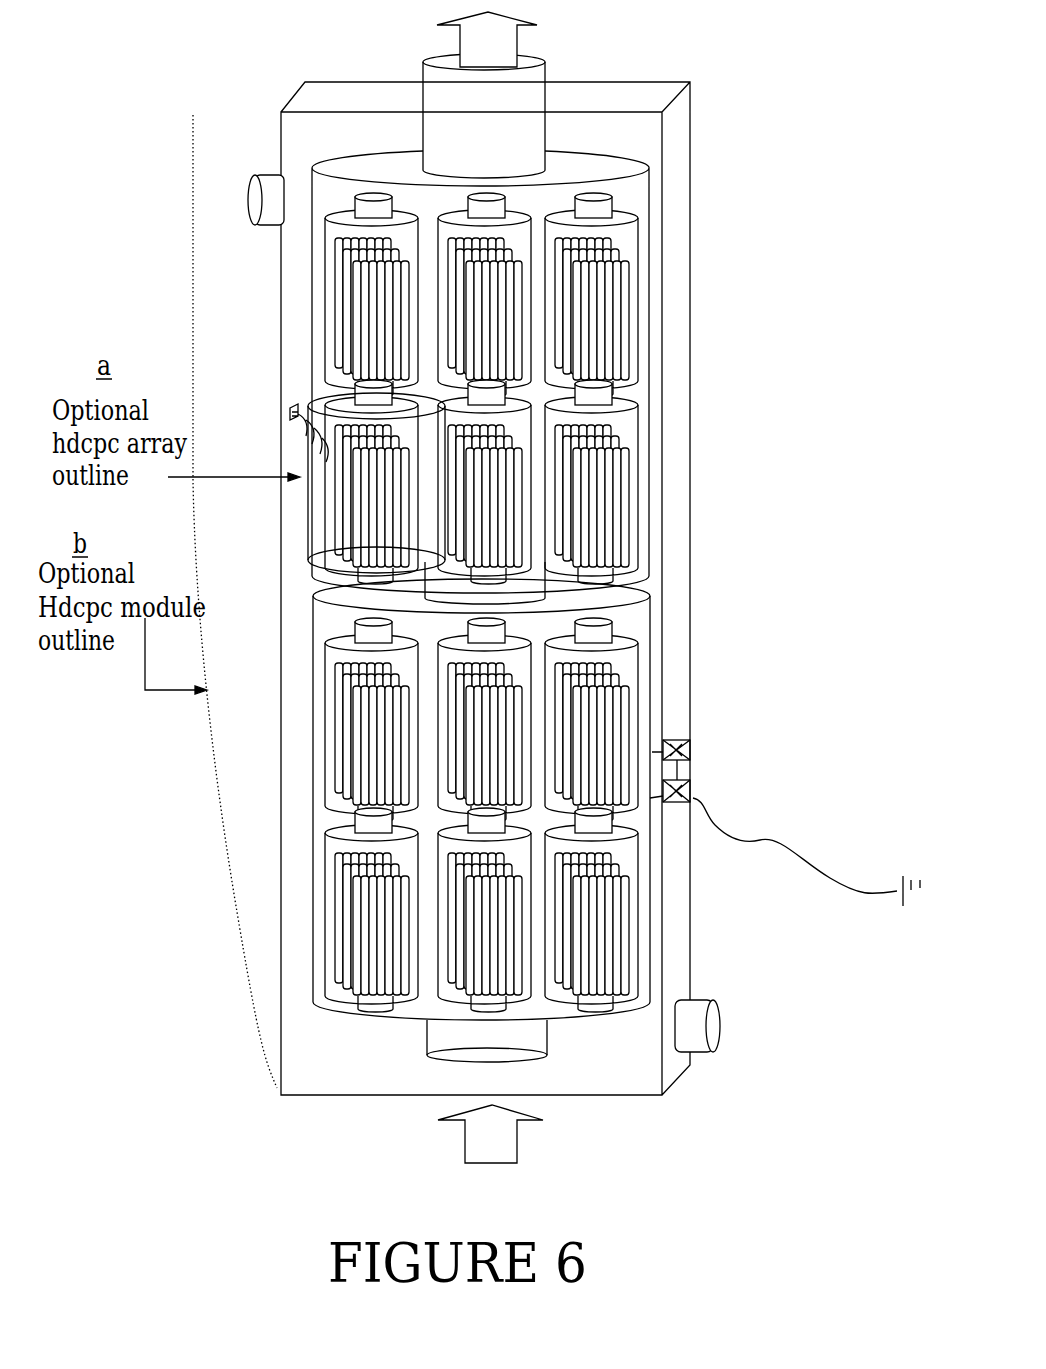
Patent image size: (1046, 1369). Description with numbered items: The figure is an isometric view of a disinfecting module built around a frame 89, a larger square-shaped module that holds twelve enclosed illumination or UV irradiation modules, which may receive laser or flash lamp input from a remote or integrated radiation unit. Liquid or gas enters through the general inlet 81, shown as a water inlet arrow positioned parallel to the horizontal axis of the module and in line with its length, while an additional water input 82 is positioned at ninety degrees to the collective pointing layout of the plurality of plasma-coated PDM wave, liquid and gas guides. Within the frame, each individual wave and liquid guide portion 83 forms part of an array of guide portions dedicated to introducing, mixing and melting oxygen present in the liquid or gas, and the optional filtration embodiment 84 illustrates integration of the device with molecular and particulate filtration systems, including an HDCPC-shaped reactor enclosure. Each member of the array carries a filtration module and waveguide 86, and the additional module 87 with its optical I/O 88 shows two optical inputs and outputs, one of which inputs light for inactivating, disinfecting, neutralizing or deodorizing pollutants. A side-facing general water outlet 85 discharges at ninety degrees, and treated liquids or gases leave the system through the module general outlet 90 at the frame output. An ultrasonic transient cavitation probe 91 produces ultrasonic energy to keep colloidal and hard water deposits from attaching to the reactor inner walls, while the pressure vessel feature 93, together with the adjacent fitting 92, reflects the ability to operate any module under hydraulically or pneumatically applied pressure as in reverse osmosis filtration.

The general inlet 81 is at (422, 1032).
The additional water input 82 is at (735, 1020).
The wave and liquid guide portion 83 is at (329, 932).
The optional filtration embodiment 84 is at (323, 733).
The general water outlet 85 is at (240, 195).
The filtration module and waveguide 86 is at (622, 279).
The additional module 87 is at (667, 482).
The additional module optical I/O 88 is at (624, 535).
The frame 89 is at (698, 677).
The module general outlet 90 is at (549, 61).
The ultrasonic transient cavitation probe 91 is at (283, 407).
The electrical feedthrough 92 is at (768, 732).
The pressure vessel feature 93 is at (797, 777).